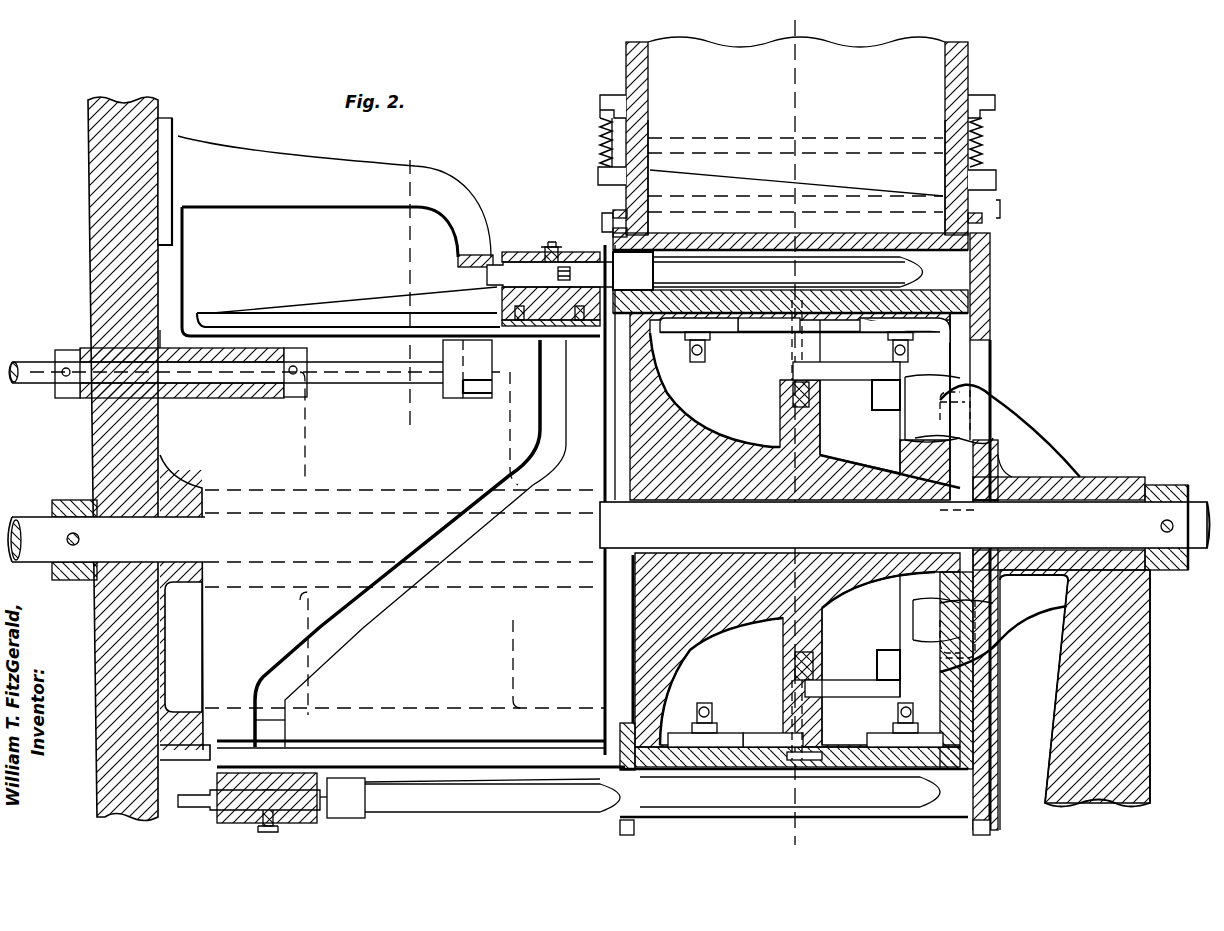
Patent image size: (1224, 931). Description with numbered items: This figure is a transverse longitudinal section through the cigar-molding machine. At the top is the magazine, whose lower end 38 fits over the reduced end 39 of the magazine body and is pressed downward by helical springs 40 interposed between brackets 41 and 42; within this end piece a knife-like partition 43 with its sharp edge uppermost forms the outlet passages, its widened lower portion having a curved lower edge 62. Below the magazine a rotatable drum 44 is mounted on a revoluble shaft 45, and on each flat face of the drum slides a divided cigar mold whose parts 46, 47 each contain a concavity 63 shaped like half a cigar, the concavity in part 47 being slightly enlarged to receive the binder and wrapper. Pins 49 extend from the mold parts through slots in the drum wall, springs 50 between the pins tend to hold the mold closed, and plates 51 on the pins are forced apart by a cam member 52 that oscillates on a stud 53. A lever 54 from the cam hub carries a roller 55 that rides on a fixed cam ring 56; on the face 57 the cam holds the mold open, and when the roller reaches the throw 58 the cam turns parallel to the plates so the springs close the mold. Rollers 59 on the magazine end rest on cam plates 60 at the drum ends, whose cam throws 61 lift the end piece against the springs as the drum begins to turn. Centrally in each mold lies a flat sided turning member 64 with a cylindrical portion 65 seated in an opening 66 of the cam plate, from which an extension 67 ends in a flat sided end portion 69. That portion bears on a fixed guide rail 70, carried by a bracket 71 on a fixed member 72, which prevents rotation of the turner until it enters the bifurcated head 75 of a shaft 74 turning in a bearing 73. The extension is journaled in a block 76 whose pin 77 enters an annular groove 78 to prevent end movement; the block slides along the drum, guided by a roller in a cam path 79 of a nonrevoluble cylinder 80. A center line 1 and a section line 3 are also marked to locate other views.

The cylinder 1 is at (797, 431).
The section line 3 is at (408, 294).
The lower end of the magazine 38 is at (602, 216).
The reduced end of the magazine body 39 is at (650, 152).
The helical springs 40 is at (600, 142).
The bracket 41 is at (600, 100).
The bracket 42 is at (605, 185).
The partition 43 is at (730, 170).
The rotatable drum 44 is at (650, 415).
The revoluble shaft 45 is at (28, 520).
The mold part 46 is at (958, 818).
The mold part 47 is at (992, 293).
The pins 49 is at (698, 362).
The springs 50 is at (704, 352).
The plate 51 is at (735, 344).
The cam member 52 is at (762, 332).
The short shaft or stud 53 is at (793, 400).
The lever 54 is at (830, 372).
The roller 55 is at (872, 392).
The fixed cam ring 56 is at (950, 423).
The face of the cam ring 57 is at (890, 388).
The throw of the cam ring 58 is at (950, 396).
The projecting rollers 59 is at (613, 214).
The cam plates 60 is at (618, 770).
The cam throws 61 is at (628, 836).
The curved lower edge 62 is at (770, 245).
The concavity 63 is at (895, 805).
The flat sided turning member 64 is at (448, 800).
The cylindrical portion 65 is at (348, 808).
The opening in the cam plate 66 is at (598, 335).
The extension 67 is at (508, 262).
The flat sided end portion 69 is at (458, 266).
The fixed guide rail 70 is at (472, 252).
The bracket 71 is at (273, 200).
The fixed member 72 is at (150, 258).
The bearing 73 is at (250, 390).
The shaft 74 is at (348, 378).
The bifurcated head 75 is at (458, 395).
The block 76 is at (522, 252).
The pin 77 is at (325, 300).
The annular groove 78 is at (570, 272).
The cam path 79 is at (380, 605).
The nonrevoluble cylinder 80 is at (200, 625).